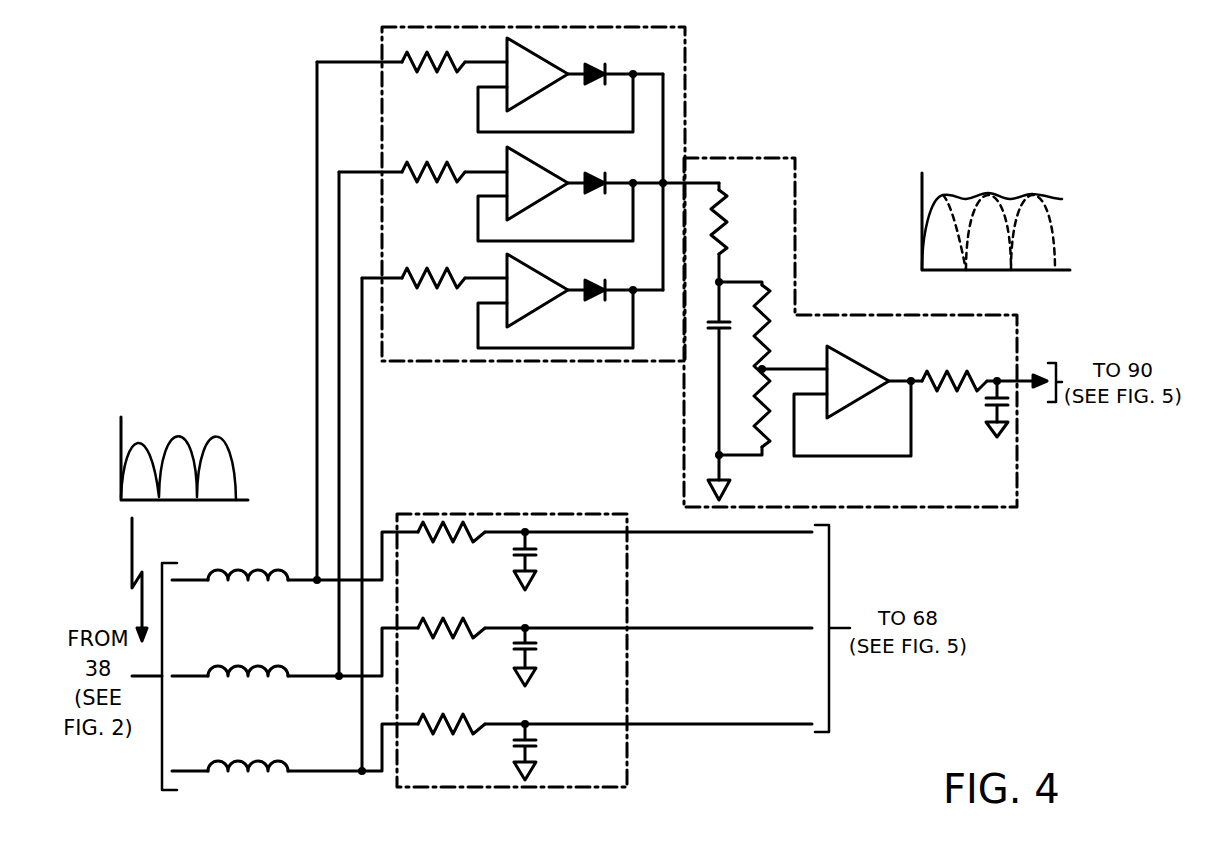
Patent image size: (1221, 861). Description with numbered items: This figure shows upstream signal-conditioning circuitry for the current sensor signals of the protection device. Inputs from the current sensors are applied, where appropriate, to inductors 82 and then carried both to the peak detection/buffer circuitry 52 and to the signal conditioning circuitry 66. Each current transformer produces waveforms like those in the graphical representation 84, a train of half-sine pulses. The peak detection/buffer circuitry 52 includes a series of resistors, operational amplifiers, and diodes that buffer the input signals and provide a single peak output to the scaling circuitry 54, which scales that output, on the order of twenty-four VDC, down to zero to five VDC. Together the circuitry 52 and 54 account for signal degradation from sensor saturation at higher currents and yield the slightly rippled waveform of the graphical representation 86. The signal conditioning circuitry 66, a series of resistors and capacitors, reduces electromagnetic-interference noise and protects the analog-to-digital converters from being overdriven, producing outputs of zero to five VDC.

The peak detection/buffer circuitry 52 is at (687, 47).
The scaling circuitry 54 is at (768, 160).
The signal conditioning circuitry 66 is at (630, 780).
The inductors 82 is at (241, 776).
The graphical representation of current transformer waveform 84 is at (164, 435).
The graphical representation of rippled output waveform 86 is at (974, 190).